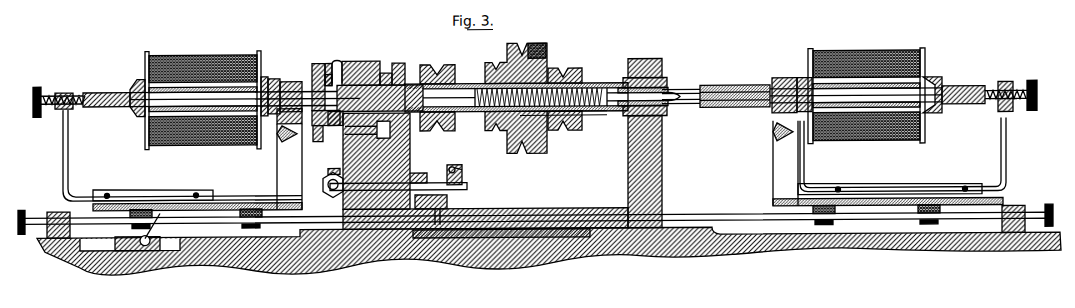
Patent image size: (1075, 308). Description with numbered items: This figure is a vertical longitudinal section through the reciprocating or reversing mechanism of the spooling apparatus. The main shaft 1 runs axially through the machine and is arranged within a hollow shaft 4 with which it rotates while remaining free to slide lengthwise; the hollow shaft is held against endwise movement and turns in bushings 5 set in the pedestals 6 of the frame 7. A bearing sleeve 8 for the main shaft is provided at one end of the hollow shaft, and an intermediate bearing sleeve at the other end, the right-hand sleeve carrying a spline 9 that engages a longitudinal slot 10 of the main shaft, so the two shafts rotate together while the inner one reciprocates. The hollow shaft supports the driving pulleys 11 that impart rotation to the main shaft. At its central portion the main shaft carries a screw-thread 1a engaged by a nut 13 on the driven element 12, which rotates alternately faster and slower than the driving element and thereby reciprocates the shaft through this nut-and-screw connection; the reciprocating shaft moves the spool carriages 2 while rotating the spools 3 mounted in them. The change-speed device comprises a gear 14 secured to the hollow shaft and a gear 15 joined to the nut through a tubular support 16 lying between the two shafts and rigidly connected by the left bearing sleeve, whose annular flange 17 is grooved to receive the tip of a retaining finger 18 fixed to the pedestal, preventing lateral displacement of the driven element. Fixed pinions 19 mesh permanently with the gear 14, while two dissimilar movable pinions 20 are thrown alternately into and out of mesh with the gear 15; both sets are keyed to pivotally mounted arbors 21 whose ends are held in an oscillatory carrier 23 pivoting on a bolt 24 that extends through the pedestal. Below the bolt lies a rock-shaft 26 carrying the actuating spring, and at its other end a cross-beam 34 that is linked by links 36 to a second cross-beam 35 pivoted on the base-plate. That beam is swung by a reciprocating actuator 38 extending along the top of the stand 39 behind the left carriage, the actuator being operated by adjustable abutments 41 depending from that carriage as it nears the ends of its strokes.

The main shaft 1 is at (702, 115).
The screw-thread 1a is at (573, 120).
The spool carriage 2 is at (272, 172).
The spool 3 is at (200, 55).
The hollow shaft 4 is at (602, 116).
The bushing 5 is at (668, 82).
The pedestal 6 is at (662, 156).
The frame 7 is at (562, 214).
The bearing sleeve 8 is at (672, 114).
The spline 9 is at (668, 93).
The longitudinal slot 10 is at (728, 92).
The driving pulley 11 is at (537, 50).
The driven element 12 is at (310, 78).
The nut 13 is at (558, 80).
The gear 14 is at (410, 72).
The gear 15 is at (328, 65).
The tubular support 16 is at (457, 88).
The annular flange 17 is at (322, 80).
The retaining finger 18 is at (360, 62).
The fixed pinion 19 is at (405, 140).
The movable pinion 20 is at (320, 130).
The arbor 21 is at (330, 134).
The oscillatory carrier 23 is at (336, 174).
The bolt 24 is at (398, 178).
The rock-shaft 26 is at (447, 185).
The cross-beam 34 is at (456, 170).
The cross-beam 35 is at (458, 201).
The link 36 is at (464, 174).
The actuator 38 is at (326, 212).
The stand 39 is at (258, 258).
The adjustable abutment 41 is at (150, 210).